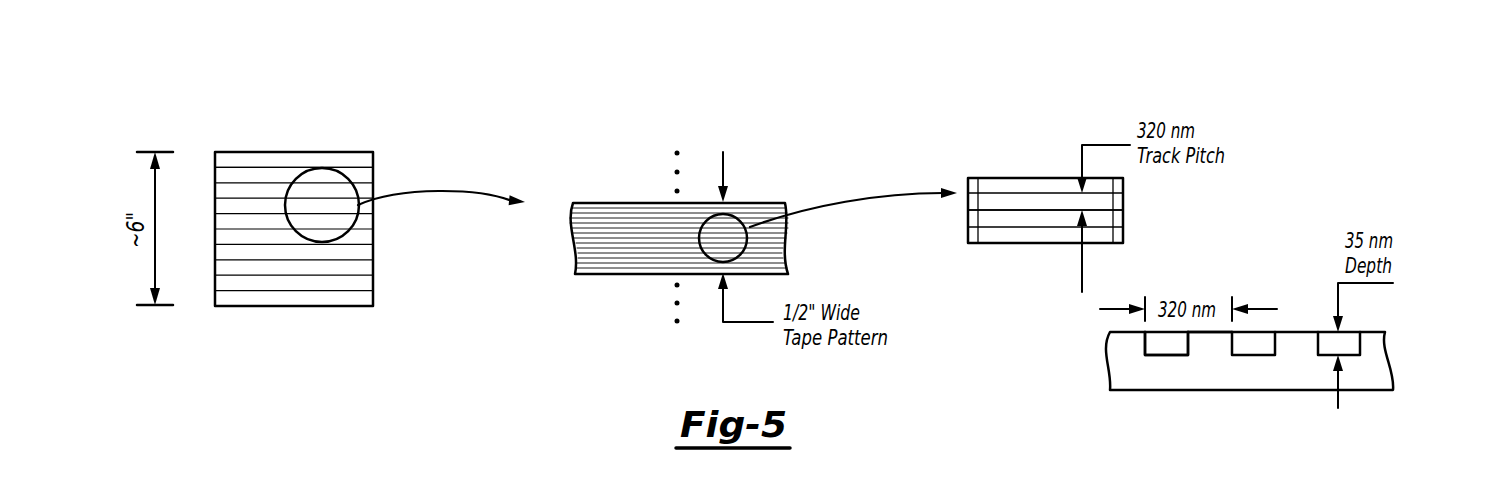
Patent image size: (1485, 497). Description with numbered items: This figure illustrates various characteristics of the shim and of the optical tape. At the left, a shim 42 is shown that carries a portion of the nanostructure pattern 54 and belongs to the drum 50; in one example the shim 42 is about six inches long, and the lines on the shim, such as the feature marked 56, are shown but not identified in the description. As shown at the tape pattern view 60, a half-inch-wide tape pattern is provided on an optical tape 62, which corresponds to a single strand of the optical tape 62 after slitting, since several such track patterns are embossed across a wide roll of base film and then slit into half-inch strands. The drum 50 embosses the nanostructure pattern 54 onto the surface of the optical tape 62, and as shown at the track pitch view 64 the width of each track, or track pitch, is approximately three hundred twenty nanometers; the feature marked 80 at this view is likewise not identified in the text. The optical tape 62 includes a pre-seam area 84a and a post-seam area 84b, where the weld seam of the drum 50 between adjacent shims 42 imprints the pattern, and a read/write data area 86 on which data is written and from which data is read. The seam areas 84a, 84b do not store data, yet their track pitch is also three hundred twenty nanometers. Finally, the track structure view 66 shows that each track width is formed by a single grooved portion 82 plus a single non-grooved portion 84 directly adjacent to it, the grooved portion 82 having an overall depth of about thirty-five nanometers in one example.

The drum 50 is at (311, 92).
The pattern lines 56 is at (240, 150).
The shim 42 is at (268, 167).
The nanostructure pattern 54 is at (353, 124).
The tape pattern view 60 is at (580, 149).
The optical tape 62 is at (760, 201).
The track pitch view 64 is at (965, 131).
The tracks 80 is at (1048, 130).
The pre-seam area 84a is at (972, 245).
The read/write data area 86 is at (1040, 245).
The post-seam area 84b is at (1118, 235).
The track structure view 66 is at (1284, 272).
The grooved portion 82 is at (1167, 355).
The non-grooved portion 84 is at (1232, 334).